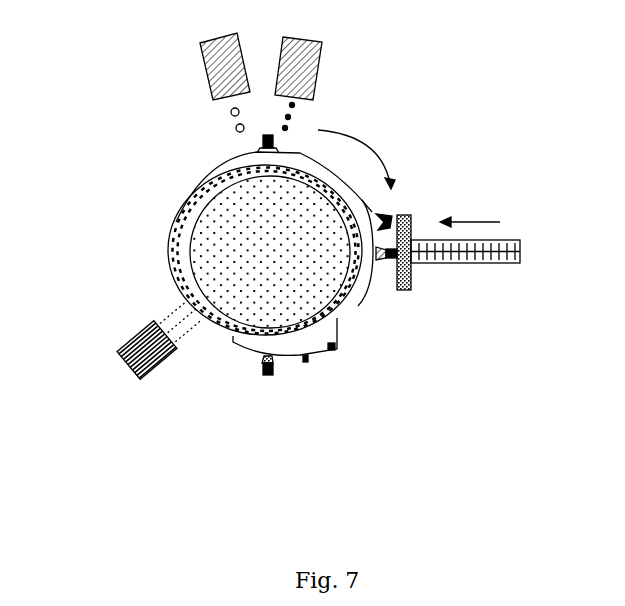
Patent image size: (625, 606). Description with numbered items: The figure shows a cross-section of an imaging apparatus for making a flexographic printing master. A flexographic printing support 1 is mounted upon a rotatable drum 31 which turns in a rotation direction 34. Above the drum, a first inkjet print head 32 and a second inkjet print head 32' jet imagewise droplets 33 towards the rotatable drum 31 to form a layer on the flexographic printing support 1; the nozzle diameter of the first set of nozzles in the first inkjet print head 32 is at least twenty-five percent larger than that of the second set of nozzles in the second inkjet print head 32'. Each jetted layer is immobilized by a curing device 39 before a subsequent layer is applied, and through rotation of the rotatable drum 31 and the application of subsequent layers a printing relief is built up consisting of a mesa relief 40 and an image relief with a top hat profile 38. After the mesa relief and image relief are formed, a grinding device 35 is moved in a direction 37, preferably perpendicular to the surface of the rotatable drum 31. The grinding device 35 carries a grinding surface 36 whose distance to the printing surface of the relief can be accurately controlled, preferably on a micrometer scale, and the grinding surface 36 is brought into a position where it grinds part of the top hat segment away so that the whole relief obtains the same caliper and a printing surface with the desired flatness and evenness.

The flexographic printing support 1 is at (175, 273).
The rotatable drum 31 is at (250, 247).
The first inkjet print head 32 is at (204, 55).
The second inkjet print head 32' is at (332, 57).
The droplets 33 is at (233, 127).
The rotation direction 34 is at (364, 154).
The grinding device 35 is at (445, 253).
The grinding surface 36 is at (408, 288).
The direction 37 is at (470, 212).
The image relief with a top hat profile 38 is at (332, 350).
The curing device 39 is at (127, 367).
The mesa relief 40 is at (247, 352).